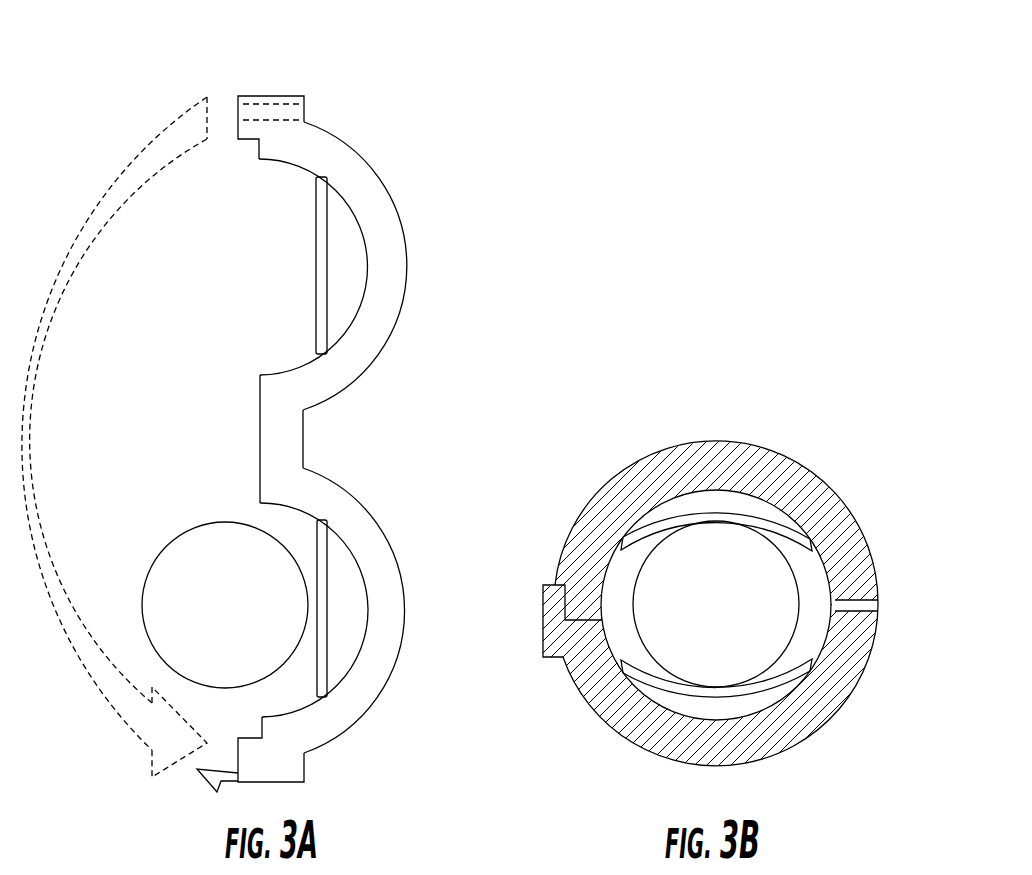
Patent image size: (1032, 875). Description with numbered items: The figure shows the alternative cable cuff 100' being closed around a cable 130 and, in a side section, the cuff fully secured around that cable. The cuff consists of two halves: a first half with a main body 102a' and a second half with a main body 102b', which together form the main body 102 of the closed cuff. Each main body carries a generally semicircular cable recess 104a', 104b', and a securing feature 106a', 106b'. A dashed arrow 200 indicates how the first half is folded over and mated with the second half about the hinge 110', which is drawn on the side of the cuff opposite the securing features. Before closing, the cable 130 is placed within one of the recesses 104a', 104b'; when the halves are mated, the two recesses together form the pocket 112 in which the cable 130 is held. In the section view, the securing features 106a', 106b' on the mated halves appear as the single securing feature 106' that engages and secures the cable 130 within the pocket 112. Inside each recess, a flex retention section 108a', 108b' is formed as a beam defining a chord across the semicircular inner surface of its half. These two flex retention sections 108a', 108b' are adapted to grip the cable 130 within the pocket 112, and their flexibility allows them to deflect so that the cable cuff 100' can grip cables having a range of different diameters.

In FIG. 3A, the cable cuff 100' is at (294, 427).
In FIG. 3B, the main body 102 is at (611, 578).
In FIG. 3A, the main body 102a' is at (383, 266).
In FIG. 3B, the main body 102a' is at (716, 484).
In FIG. 3A, the main body 102b' is at (374, 610).
In FIG. 3A, the cable recess 104a' is at (257, 267).
In FIG. 3A, the cable recess 104b' is at (258, 574).
In FIG. 3B, the securing feature 106' is at (551, 587).
In FIG. 3A, the securing feature 106a' is at (302, 108).
In FIG. 3A, the securing feature 106b' is at (211, 771).
In FIG. 3A, the flex retention section 108a' is at (292, 265).
In FIG. 3B, the flex retention section 108a' is at (742, 486).
In FIG. 3A, the flex retention section 108b' is at (387, 592).
In FIG. 3B, the flex retention section 108b' is at (747, 720).
In FIG. 3A, the hinge 110' is at (325, 439).
In FIG. 3B, the hinge 110' is at (880, 638).
In FIG. 3B, the pocket 112 is at (807, 568).
In FIG. 3A, the cable 130 is at (242, 617).
In FIG. 3B, the cable 130 is at (733, 617).
In FIG. 3A, the rotation direction 200 is at (100, 97).
In FIG. 3B, the rotation direction 200 is at (608, 415).